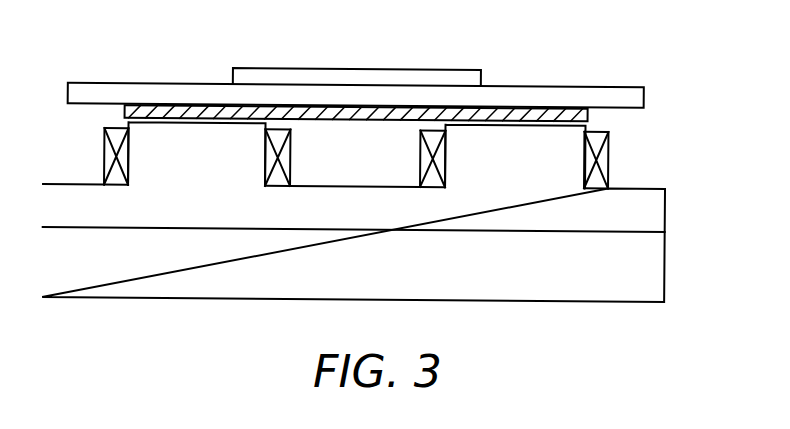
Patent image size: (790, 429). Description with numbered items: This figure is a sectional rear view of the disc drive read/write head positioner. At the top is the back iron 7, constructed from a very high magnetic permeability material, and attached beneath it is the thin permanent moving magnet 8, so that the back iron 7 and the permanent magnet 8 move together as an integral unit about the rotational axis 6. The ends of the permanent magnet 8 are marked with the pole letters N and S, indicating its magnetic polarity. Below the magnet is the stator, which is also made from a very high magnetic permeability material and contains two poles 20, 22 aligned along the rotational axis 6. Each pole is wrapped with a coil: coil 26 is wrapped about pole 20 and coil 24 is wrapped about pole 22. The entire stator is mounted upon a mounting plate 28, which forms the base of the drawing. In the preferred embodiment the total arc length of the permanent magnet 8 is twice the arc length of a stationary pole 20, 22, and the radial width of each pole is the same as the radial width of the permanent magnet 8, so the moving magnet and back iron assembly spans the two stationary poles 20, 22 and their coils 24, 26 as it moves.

The rotational axis 6 is at (363, 69).
The back iron 7 is at (550, 85).
The permanent magnet 8 is at (588, 110).
The pole 20 is at (208, 178).
The pole 22 is at (528, 179).
The coil 24 is at (610, 177).
The coil 26 is at (103, 149).
The mounting plate 28 is at (377, 287).
The north pole N is at (125, 112).
The south pole S is at (106, 99).